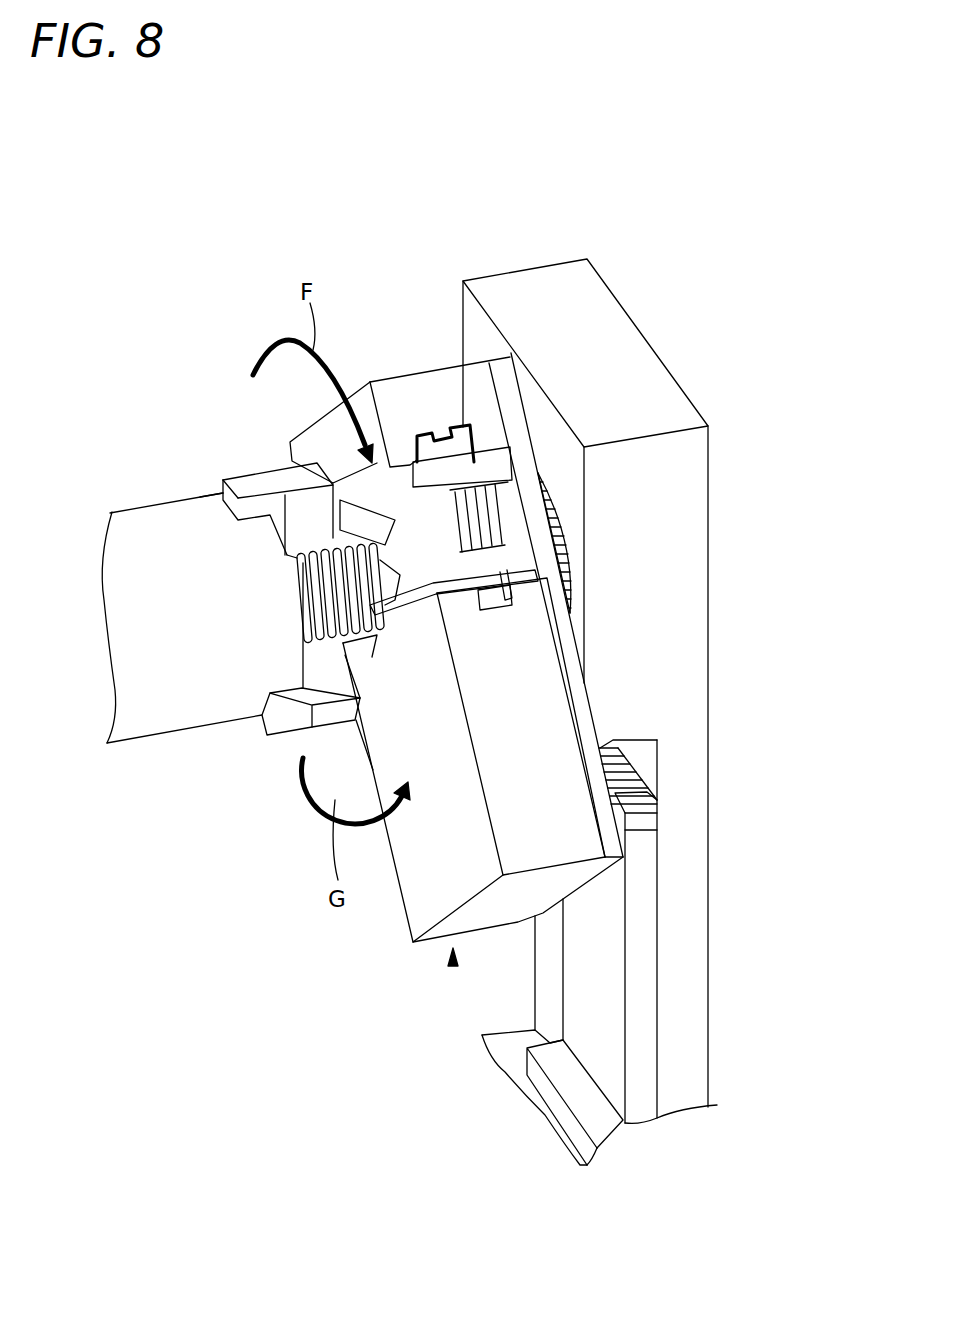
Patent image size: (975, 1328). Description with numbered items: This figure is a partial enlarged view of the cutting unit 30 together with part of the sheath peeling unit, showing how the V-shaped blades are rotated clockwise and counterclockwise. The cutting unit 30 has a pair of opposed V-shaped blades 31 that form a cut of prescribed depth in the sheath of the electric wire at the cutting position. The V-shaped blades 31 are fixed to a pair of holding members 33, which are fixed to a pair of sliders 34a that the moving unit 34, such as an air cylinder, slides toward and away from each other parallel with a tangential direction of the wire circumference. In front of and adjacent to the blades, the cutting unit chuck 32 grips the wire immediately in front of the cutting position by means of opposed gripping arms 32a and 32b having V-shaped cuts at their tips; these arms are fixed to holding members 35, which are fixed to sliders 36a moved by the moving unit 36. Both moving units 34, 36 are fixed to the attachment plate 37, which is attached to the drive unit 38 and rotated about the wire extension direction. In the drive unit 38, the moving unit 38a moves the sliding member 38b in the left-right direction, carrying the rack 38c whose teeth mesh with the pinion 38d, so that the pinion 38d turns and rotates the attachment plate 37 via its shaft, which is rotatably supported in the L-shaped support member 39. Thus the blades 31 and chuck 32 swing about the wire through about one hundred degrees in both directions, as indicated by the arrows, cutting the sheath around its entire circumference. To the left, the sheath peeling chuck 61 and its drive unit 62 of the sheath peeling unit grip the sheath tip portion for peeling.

The cutting unit 30 is at (453, 965).
The V-shaped blades 31 is at (412, 570).
The cutting unit chuck 32 is at (480, 593).
The gripping arm 32a is at (497, 602).
The gripping arm 32b is at (273, 473).
The holding members 33 is at (455, 560).
The moving unit 34 is at (420, 860).
The sliders 34a is at (492, 600).
The holding members 35 is at (498, 465).
The moving unit 36 is at (410, 397).
The sliders 36a is at (465, 430).
The attachment plate 37 is at (585, 716).
The drive unit 38 is at (543, 483).
The moving unit 38a is at (577, 1090).
The sliding member 38b is at (640, 962).
The rack 38c is at (640, 820).
The pinion 38d is at (567, 547).
The support member 39 is at (678, 815).
The sheath peeling chuck 61 is at (327, 675).
The drive unit 62 is at (155, 710).